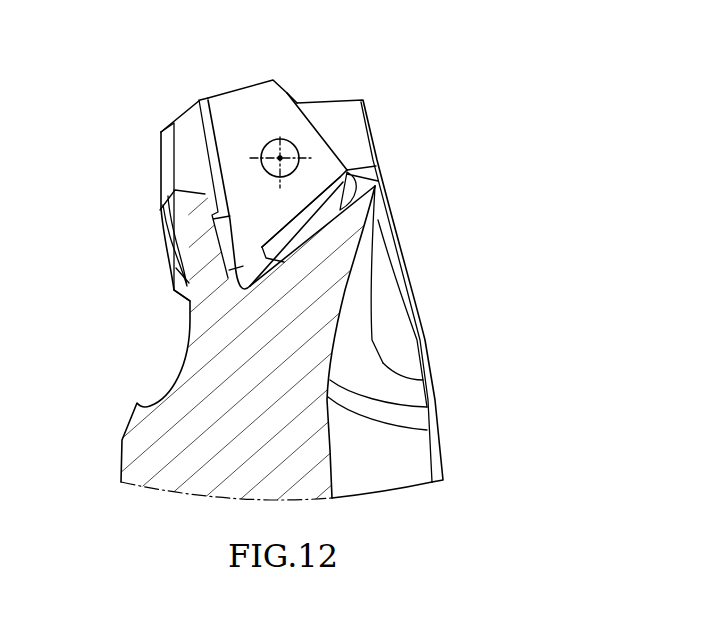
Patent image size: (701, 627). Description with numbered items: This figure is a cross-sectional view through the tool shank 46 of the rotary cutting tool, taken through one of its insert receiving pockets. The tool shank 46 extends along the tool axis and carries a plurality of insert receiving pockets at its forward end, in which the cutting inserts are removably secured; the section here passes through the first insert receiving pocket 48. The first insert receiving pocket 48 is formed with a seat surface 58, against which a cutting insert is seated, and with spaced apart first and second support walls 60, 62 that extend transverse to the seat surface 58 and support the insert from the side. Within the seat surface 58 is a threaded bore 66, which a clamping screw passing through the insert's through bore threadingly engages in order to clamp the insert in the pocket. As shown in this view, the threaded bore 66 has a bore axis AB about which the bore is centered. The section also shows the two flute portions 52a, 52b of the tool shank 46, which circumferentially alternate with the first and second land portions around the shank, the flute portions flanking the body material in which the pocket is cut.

The tool shank 46 is at (402, 222).
The first insert receiving pocket 48 is at (233, 131).
The flute portion 52a is at (173, 346).
The flute portion 52b is at (352, 355).
The seat surface 58 is at (272, 219).
The first support wall 60 is at (197, 110).
The second support wall 62 is at (303, 210).
The threaded bore 66 is at (275, 152).
The bore axis AB is at (281, 157).